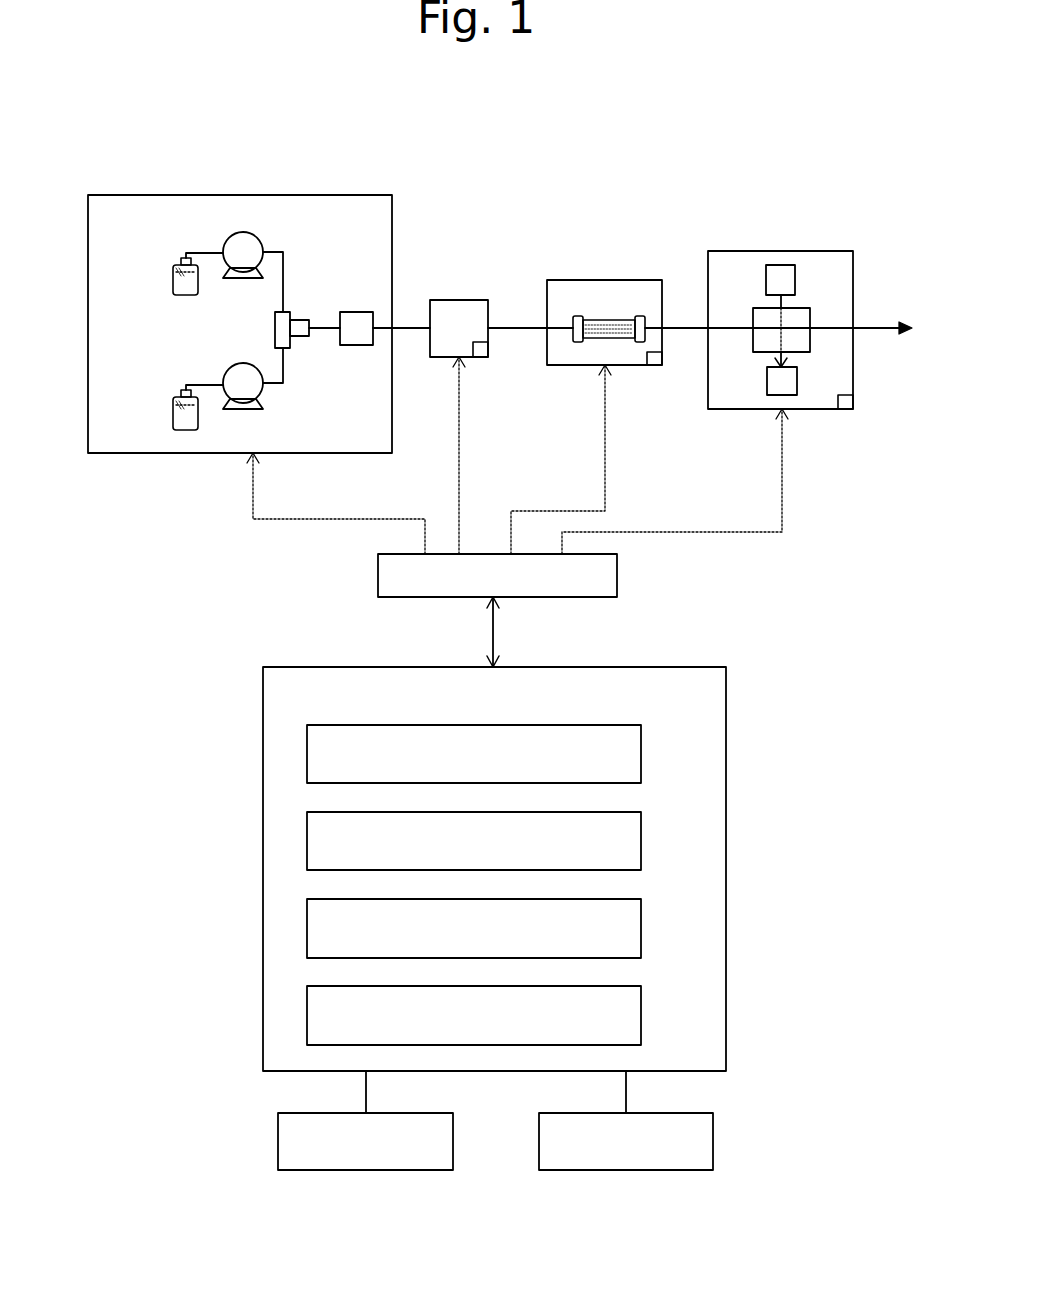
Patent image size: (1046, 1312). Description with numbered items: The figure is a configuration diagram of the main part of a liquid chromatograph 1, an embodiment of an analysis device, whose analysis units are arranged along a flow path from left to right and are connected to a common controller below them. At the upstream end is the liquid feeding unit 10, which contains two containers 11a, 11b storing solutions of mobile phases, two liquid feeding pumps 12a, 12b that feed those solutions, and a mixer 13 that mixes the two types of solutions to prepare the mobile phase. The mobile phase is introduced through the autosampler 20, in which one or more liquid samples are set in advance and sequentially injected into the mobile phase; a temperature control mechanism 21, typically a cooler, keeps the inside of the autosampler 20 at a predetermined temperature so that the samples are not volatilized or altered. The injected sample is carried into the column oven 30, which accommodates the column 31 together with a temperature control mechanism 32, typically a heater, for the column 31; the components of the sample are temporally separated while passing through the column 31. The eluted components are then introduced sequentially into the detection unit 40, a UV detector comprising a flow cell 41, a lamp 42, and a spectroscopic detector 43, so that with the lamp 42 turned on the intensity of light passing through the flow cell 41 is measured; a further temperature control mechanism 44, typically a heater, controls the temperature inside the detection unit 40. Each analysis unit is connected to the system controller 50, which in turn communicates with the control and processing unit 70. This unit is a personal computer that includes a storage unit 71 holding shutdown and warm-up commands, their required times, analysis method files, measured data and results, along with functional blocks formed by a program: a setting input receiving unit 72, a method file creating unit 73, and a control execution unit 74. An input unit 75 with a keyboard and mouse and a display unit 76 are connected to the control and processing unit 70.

The liquid chromatograph 1 is at (840, 143).
The liquid feeding unit 10 is at (358, 194).
The container 11a is at (173, 270).
The container 11b is at (173, 402).
The liquid feeding pump 12a is at (257, 238).
The liquid feeding pump 12b is at (263, 393).
The mixer 13 is at (355, 312).
The autosampler 20 is at (473, 300).
The temperature control mechanism 21 is at (480, 358).
The column oven 30 is at (600, 280).
The column 31 is at (608, 318).
The temperature control mechanism 32 is at (657, 367).
The detection unit 40 is at (812, 251).
The flow cell 41 is at (800, 352).
The lamp 42 is at (795, 273).
The spectroscopic detector 43 is at (767, 382).
The temperature control mechanism 44 is at (847, 409).
The system controller 50 is at (484, 588).
The control and processing unit 70 is at (732, 709).
The storage unit 71 is at (644, 754).
The setting input receiving unit 72 is at (644, 837).
The method file creating unit 73 is at (644, 927).
The control execution unit 74 is at (644, 1013).
The input unit 75 is at (412, 1170).
The display unit 76 is at (668, 1170).